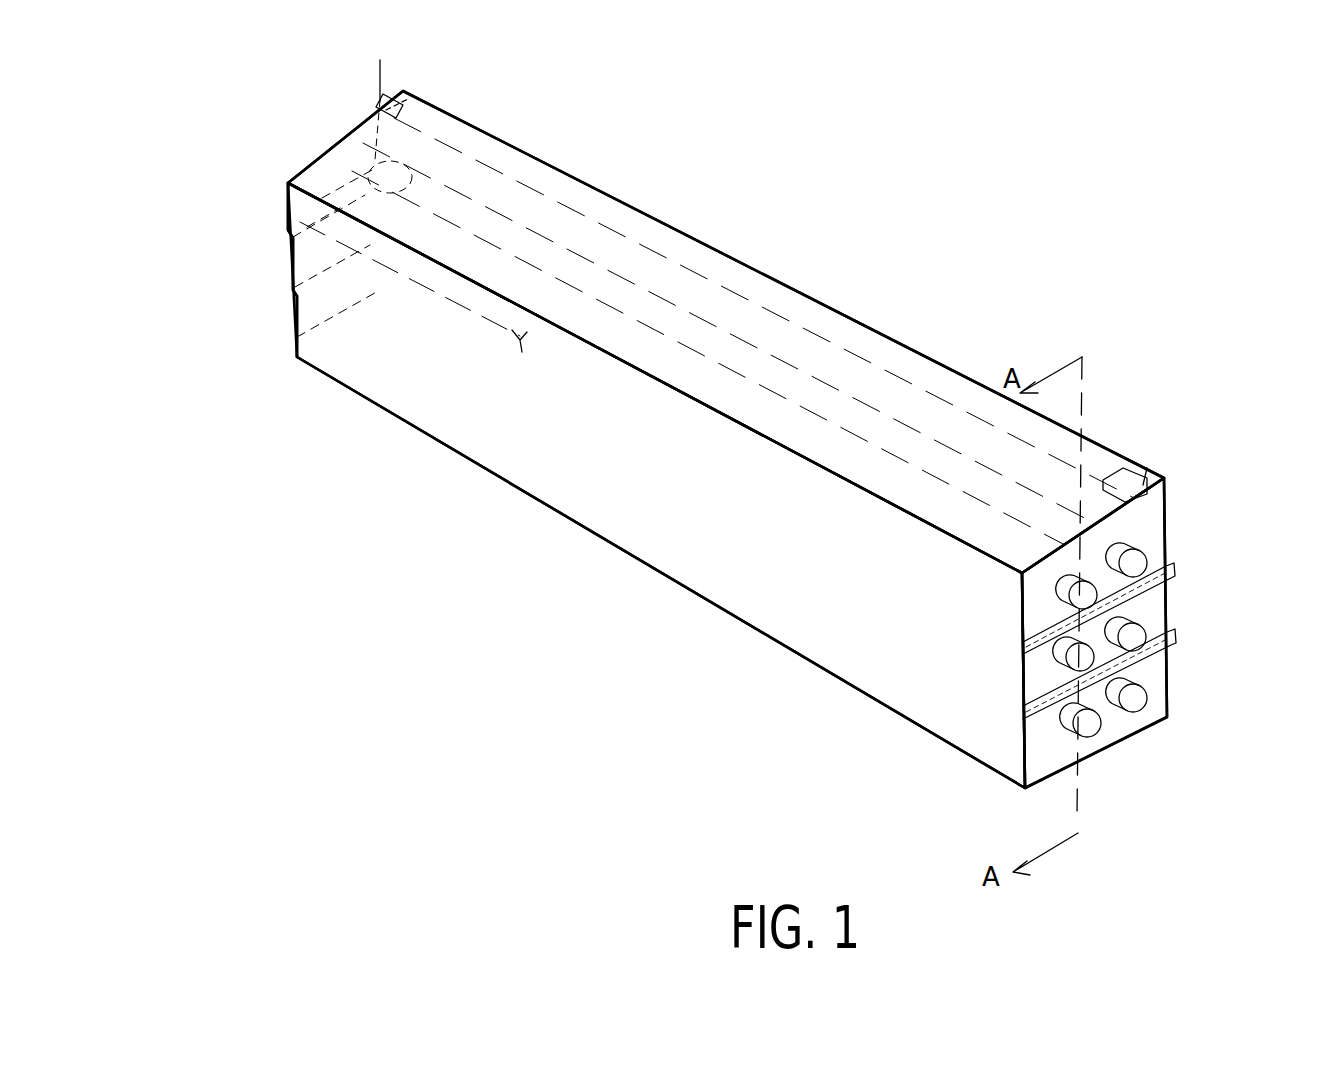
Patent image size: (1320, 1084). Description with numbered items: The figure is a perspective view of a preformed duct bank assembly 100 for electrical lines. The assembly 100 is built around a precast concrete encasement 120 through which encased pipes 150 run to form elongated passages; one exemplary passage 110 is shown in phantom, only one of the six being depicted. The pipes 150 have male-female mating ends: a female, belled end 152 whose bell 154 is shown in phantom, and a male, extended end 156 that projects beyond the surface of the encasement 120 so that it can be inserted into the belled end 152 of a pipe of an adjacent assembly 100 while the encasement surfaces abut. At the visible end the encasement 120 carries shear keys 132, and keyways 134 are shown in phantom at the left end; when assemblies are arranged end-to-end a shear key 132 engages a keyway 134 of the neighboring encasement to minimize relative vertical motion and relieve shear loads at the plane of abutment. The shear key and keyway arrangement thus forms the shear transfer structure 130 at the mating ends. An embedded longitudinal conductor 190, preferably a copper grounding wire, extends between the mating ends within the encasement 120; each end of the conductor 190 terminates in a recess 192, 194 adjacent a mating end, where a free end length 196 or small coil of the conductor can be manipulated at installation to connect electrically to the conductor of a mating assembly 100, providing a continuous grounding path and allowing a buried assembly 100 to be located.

The duct bank assembly 100 is at (834, 225).
The passage 110 is at (504, 233).
The encasement 120 is at (636, 462).
The end connection region 130 is at (1193, 567).
The shear key 132 is at (1025, 730).
The keyway 134 is at (290, 232).
The pipe 150 is at (1063, 573).
The belled end 152 is at (292, 200).
The bell 154 is at (420, 152).
The extended end 156 is at (1150, 712).
The conductor 190 is at (477, 168).
The recess 192 is at (405, 101).
The recess 194 is at (1150, 473).
The free end length 196 is at (380, 101).